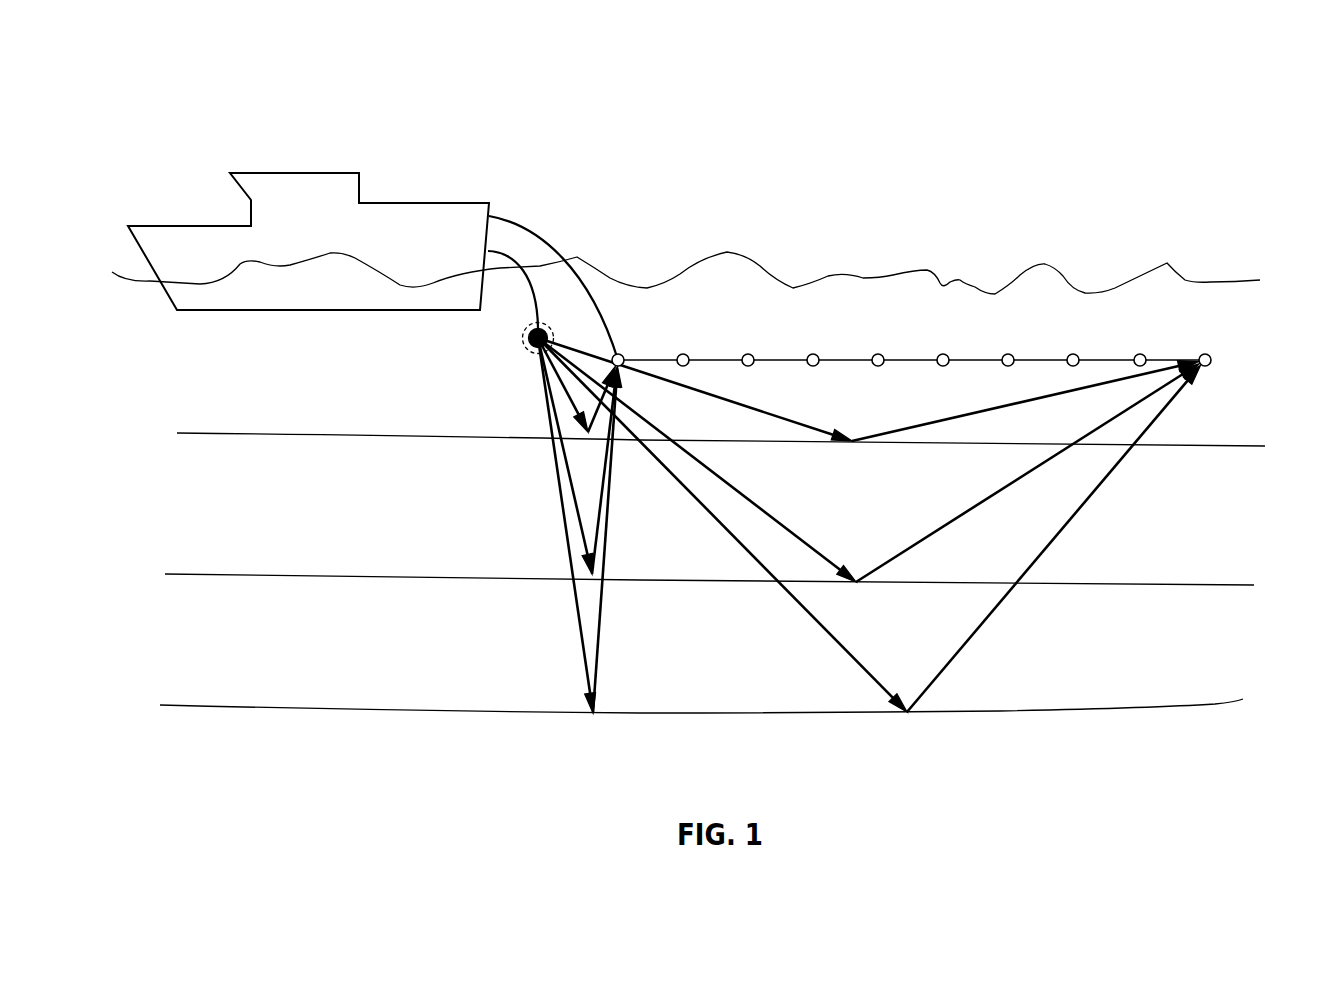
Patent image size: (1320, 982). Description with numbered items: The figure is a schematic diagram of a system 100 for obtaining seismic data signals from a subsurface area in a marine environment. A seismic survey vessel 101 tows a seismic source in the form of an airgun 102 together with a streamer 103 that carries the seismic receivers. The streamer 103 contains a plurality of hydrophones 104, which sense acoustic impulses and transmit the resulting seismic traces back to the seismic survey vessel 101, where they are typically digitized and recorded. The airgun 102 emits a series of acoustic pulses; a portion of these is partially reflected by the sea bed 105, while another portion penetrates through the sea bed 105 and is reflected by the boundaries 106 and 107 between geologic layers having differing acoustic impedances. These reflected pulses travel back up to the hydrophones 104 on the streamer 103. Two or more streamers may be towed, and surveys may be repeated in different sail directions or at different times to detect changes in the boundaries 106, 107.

The marine seismic survey system 100 is at (187, 97).
The seismic survey vessel 101 is at (391, 203).
The airgun 102 is at (524, 349).
The streamer 103 is at (715, 360).
The hydrophones 104 is at (1002, 359).
The sea bed 105 is at (302, 432).
The boundary between geologic layers 106 is at (302, 572).
The boundary between geologic layers 107 is at (302, 712).